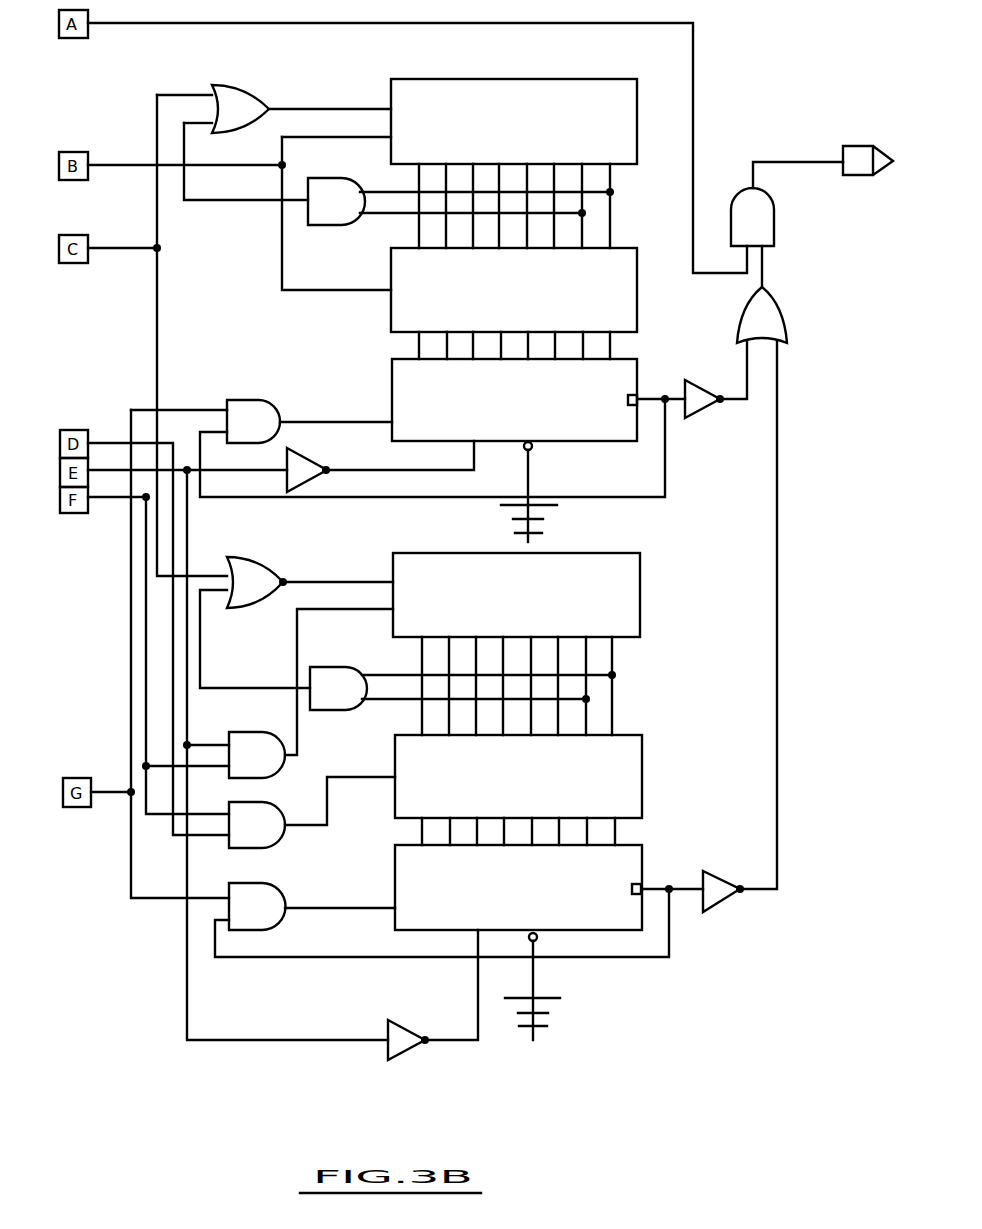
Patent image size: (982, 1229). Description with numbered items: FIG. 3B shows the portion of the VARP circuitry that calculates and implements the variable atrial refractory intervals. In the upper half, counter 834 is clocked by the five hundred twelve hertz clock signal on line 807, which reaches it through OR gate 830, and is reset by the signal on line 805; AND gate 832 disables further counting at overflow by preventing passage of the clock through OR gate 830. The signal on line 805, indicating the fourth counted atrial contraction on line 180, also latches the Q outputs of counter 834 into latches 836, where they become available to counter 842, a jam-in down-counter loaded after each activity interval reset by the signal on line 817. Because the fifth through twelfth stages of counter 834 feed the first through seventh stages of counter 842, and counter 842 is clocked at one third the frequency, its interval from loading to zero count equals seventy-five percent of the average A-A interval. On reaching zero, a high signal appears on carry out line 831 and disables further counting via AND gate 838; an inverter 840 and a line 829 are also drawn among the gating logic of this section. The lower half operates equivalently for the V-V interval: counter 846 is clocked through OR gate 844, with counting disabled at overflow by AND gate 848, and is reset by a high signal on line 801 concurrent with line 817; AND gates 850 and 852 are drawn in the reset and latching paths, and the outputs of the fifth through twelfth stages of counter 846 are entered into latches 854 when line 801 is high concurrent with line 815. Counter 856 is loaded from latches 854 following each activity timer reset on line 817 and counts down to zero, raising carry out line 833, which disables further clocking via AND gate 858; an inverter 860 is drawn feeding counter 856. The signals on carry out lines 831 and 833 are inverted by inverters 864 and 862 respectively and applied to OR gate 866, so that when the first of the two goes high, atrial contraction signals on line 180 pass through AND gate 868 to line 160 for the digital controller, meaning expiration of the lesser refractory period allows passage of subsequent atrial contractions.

The line 160 is at (775, 162).
The line 180 is at (123, 23).
The line 801 is at (118, 499).
The line 805 is at (96, 164).
The line 807 is at (96, 247).
The line 815 is at (103, 438).
The line 817 is at (101, 474).
The input signal line G 829 is at (120, 790).
The OR gate 830 is at (232, 84).
The carry out line 831 is at (643, 397).
The AND gate 832 is at (316, 180).
The carry out line 833 is at (647, 889).
The counter 834 is at (400, 79).
The latches 836 is at (391, 308).
The AND gate 838 is at (257, 400).
The inverter 840 is at (307, 453).
The counter 842 is at (563, 441).
The OR gate 844 is at (240, 558).
The counter 846 is at (565, 553).
The AND gate 848 is at (333, 667).
The AND gate 850 is at (270, 777).
The AND gate 852 is at (267, 847).
The latches 854 is at (627, 735).
The counter 856 is at (630, 845).
The AND gate 858 is at (268, 930).
The inverter 860 is at (400, 1057).
The inverter 862 is at (718, 908).
The inverter 864 is at (701, 410).
The OR gate 866 is at (777, 302).
The AND gate 868 is at (772, 213).